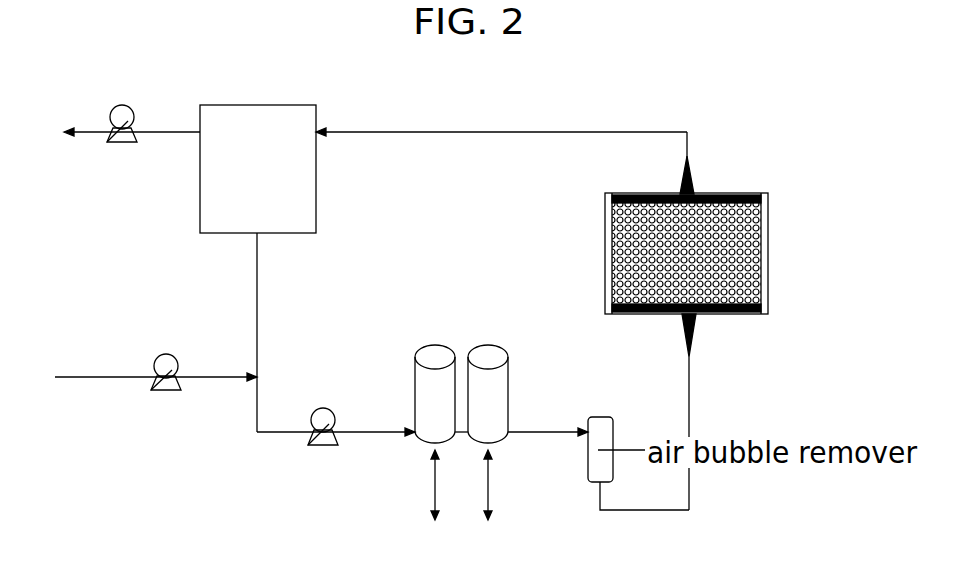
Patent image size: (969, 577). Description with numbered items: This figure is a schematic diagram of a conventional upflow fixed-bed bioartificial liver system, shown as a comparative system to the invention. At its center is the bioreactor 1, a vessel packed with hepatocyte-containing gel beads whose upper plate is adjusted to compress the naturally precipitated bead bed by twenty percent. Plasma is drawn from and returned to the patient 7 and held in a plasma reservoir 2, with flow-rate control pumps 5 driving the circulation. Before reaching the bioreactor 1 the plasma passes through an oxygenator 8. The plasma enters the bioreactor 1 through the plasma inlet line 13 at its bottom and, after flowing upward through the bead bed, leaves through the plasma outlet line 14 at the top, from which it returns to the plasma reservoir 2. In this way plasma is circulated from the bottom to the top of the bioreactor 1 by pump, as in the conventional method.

The bioreactor 1 is at (605, 253).
The plasma reservoir 2 is at (258, 169).
The flow-rate control pump 5 is at (222, 275).
The patient 7 is at (139, 253).
The oxygenator 8 is at (461, 419).
The plasma inlet line 13 is at (667, 412).
The plasma outlet line 14 is at (705, 175).